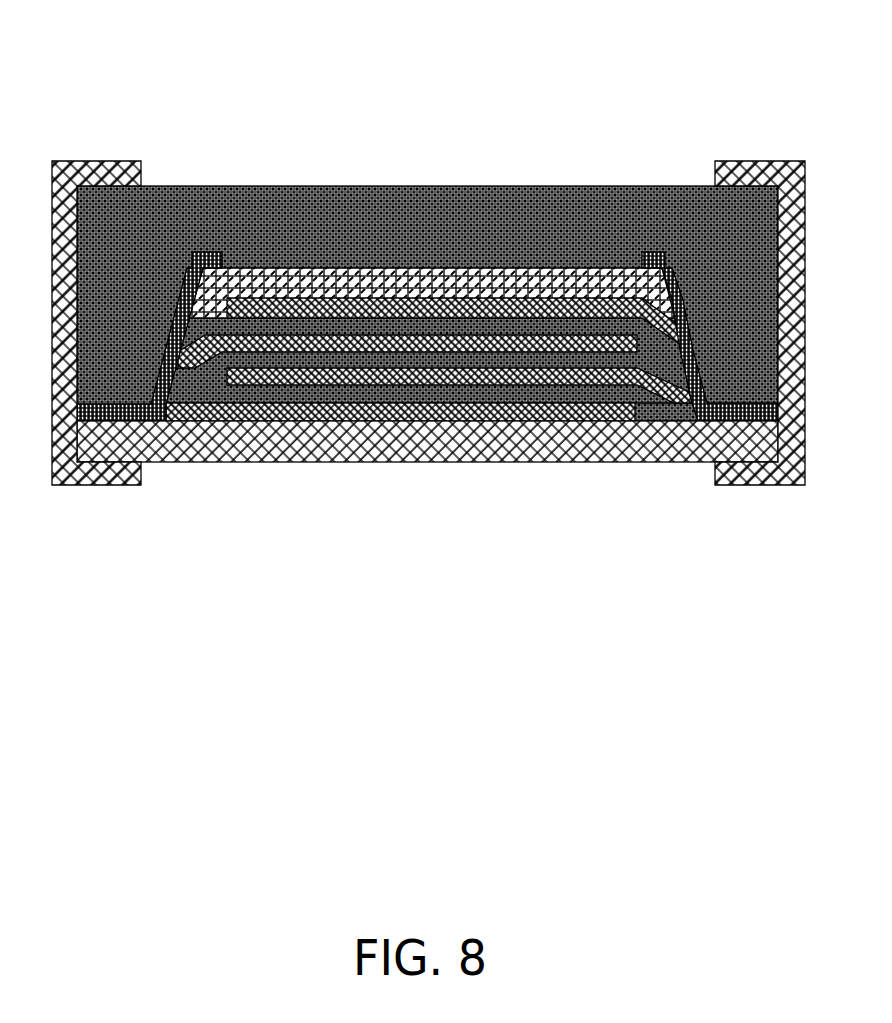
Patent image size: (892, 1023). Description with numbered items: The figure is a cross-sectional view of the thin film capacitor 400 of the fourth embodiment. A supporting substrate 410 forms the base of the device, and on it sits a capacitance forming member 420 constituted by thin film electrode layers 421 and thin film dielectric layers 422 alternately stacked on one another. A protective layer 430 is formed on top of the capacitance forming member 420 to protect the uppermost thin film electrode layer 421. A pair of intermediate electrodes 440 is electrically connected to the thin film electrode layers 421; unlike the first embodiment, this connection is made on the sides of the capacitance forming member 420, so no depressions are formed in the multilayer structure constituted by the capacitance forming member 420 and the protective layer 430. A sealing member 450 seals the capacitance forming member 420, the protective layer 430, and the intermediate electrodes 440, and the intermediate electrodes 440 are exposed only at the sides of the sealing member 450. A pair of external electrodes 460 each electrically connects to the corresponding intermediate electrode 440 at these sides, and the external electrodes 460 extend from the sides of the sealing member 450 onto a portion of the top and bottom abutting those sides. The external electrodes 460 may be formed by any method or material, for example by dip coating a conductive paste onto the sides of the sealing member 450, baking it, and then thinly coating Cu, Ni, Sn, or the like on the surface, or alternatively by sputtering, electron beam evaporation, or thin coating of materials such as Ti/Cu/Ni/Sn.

The thin film capacitor 400 is at (418, 118).
The supporting substrate 410 is at (267, 462).
The capacitance forming member 420 is at (429, 364).
The thin film electrode layers 421 is at (527, 410).
The thin film dielectric layers 422 is at (575, 395).
The protective layer 430 is at (503, 280).
The intermediate electrodes 440 is at (213, 252).
The sealing member 450 is at (355, 230).
The external electrodes 460 is at (96, 161).